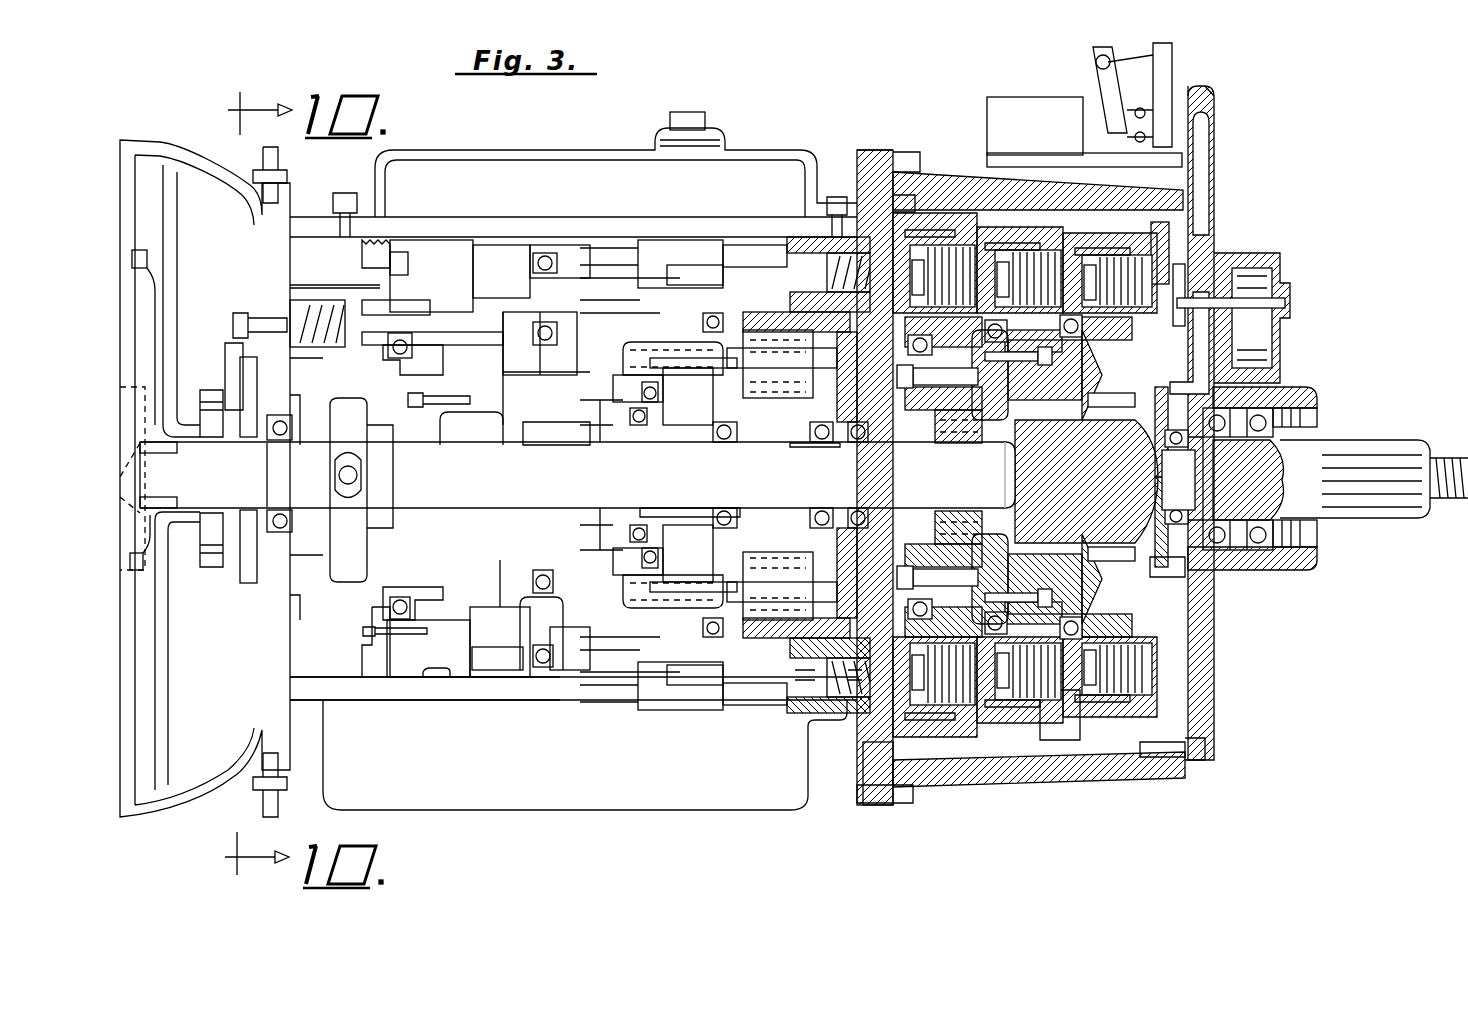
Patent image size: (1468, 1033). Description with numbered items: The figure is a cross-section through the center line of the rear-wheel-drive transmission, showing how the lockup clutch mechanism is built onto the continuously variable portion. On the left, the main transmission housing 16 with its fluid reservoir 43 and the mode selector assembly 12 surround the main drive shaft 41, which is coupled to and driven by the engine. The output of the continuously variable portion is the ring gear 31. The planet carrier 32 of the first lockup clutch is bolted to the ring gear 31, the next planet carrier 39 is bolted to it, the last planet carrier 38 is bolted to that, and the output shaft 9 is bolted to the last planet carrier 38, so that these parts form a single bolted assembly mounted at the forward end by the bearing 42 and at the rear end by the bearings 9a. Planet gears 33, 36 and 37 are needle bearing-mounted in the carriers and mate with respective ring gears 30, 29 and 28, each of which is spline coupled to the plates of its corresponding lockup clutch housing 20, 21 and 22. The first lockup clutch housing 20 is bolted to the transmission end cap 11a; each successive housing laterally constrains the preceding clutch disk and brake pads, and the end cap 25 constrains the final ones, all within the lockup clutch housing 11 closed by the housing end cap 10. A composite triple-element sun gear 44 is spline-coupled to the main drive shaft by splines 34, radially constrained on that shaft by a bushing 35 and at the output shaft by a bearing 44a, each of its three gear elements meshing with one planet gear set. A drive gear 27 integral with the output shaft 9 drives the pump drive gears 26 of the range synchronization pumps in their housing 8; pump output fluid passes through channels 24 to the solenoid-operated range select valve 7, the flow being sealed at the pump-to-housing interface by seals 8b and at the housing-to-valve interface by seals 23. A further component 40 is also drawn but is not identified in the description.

The solenoid-operated range select valve 7 is at (1127, 80).
The range synchronization pump housing 8 is at (1282, 343).
The pump-to-housing seal 8b is at (1237, 285).
The output shaft 9 is at (1372, 437).
The rear end bearing 9a is at (1275, 408).
The housing end cap 10 is at (1214, 690).
The lockup clutch housing 11 is at (957, 783).
The transmission end cap 11a is at (868, 810).
The mode selector assembly 12 is at (537, 812).
The main transmission housing 16 is at (480, 703).
The first lockup clutch housing 20 is at (880, 150).
The second lockup clutch housing 21 is at (1010, 200).
The third lockup clutch housing 22 is at (1083, 197).
The housing-to-valve seal 23 is at (1190, 90).
The channel 24 is at (1215, 118).
The end cap 25 is at (1160, 240).
The pump drive gear 26 is at (1185, 270).
The drive gear 27 is at (1170, 567).
The third ring gear 28 is at (1180, 765).
The second ring gear 29 is at (1063, 717).
The first ring gear 30 is at (885, 577).
The ring gear 31 is at (773, 645).
The first planet carrier 32 is at (867, 513).
The first planet gears 33 is at (940, 448).
The splines 34 is at (962, 508).
The bushing 35 is at (1015, 448).
The second planet gears 36 is at (1045, 410).
The third planet gears 37 is at (1115, 423).
The last planet carrier 38 is at (1137, 525).
The second planet carrier 39 is at (1045, 513).
The bearing 40 is at (823, 440).
The main drive shaft 41 is at (700, 517).
The forward end bearing 42 is at (863, 617).
The fluid reservoir 43 is at (468, 150).
The composite triple-element sun gear 44 is at (1203, 473).
The bearing 44a is at (1190, 527).